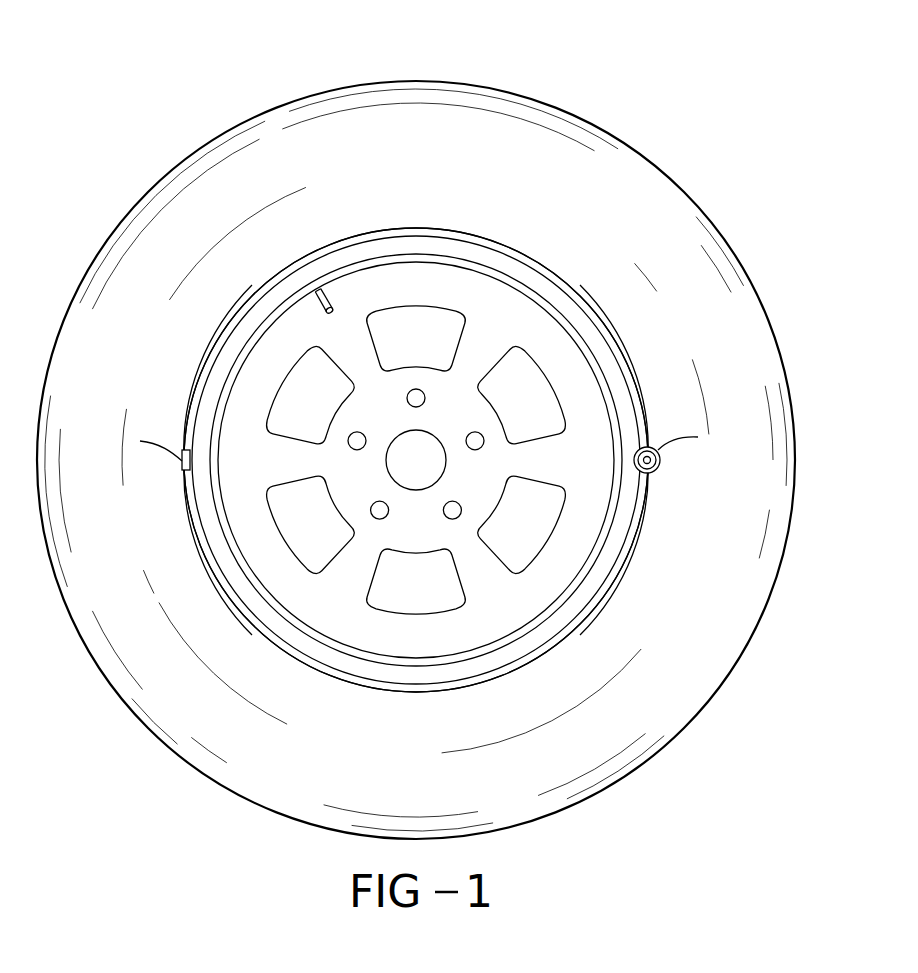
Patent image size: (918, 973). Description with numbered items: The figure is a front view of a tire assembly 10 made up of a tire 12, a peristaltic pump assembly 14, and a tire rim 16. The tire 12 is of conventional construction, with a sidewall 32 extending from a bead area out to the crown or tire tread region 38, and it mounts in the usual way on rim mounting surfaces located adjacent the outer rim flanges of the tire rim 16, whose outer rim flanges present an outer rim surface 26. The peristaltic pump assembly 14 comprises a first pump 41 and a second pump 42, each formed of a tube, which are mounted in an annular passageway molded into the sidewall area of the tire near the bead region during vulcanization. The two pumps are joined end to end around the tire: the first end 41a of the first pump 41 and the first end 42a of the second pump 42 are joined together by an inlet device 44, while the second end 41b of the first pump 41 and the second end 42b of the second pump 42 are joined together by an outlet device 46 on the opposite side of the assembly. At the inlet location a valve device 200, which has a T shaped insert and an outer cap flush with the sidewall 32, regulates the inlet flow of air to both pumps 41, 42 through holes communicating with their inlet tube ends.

The tire assembly 10 is at (416, 423).
The tire 12 is at (416, 460).
The peristaltic pump assembly 14 is at (423, 461).
The tire rim 16 is at (506, 337).
The outer rim surface 26 is at (572, 280).
The sidewall 32 is at (679, 221).
The tire tread region 38 is at (620, 141).
The first pump 41 is at (410, 228).
The first end of first pump 41a is at (648, 445).
The second end of first pump 41b is at (183, 452).
The second pump 42 is at (456, 690).
The first end of second pump 42a is at (650, 476).
The second end of second pump 42b is at (182, 474).
The inlet device 44 is at (709, 464).
The valve device 200 is at (661, 477).
The outlet device 46 is at (174, 481).